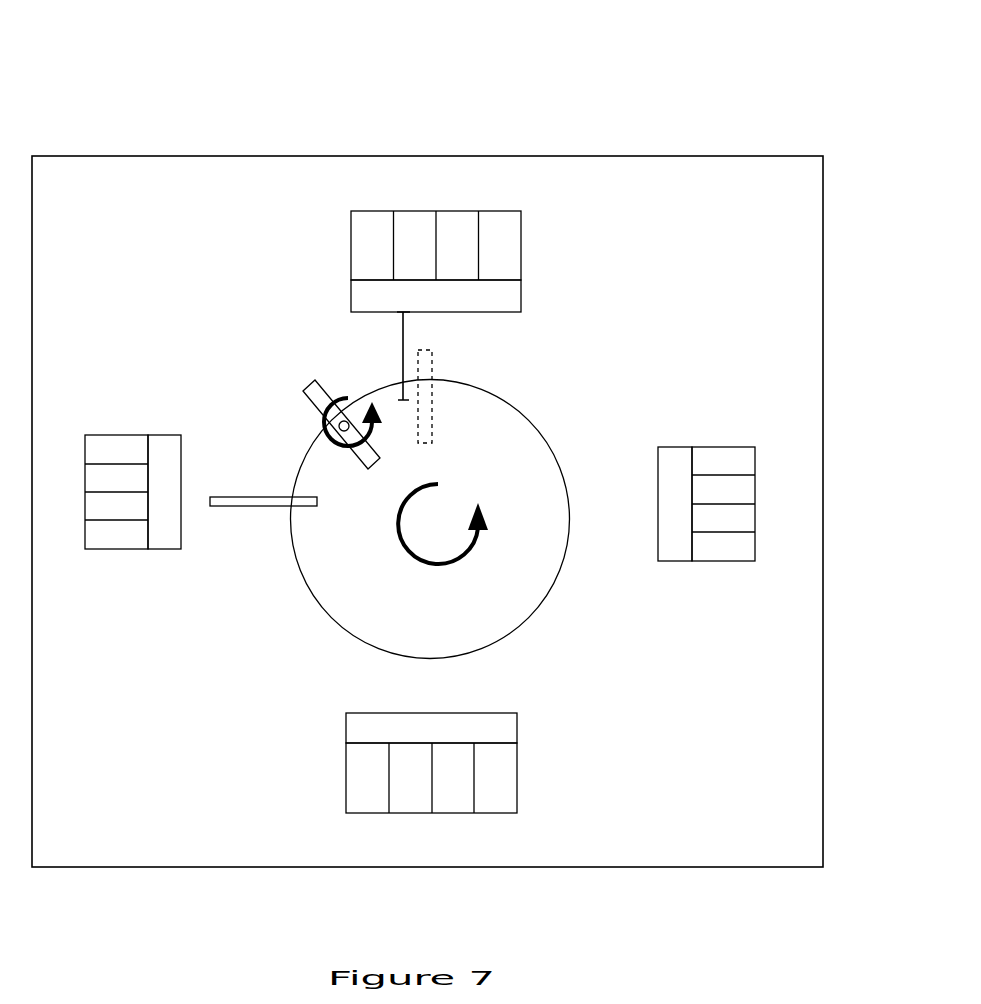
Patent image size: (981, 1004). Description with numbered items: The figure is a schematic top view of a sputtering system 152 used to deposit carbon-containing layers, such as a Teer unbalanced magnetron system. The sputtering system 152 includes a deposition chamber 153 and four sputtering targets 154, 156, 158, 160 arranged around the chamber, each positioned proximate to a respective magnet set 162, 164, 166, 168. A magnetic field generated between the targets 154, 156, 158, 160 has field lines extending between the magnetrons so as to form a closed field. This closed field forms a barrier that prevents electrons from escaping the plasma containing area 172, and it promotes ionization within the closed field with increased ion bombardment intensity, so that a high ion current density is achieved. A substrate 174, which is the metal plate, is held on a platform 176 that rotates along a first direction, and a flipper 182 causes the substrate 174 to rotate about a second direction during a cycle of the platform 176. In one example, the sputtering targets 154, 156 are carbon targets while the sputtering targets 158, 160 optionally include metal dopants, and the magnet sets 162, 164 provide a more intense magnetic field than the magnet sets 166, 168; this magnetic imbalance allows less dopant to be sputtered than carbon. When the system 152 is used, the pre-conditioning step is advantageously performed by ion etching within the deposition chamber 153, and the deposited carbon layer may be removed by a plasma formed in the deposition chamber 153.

The sputtering system 152 is at (578, 90).
The deposition chamber 153 is at (210, 155).
The sputtering target 154 is at (352, 292).
The sputtering target 156 is at (517, 724).
The sputtering target 158 is at (170, 440).
The sputtering target 160 is at (683, 447).
The magnet set 162 is at (525, 240).
The magnet set 164 is at (330, 777).
The magnet set 166 is at (125, 558).
The magnet set 168 is at (722, 567).
The plasma containing area 172 is at (557, 410).
The substrate 174 is at (312, 380).
The platform 176 is at (317, 602).
The flipper 182 is at (262, 495).